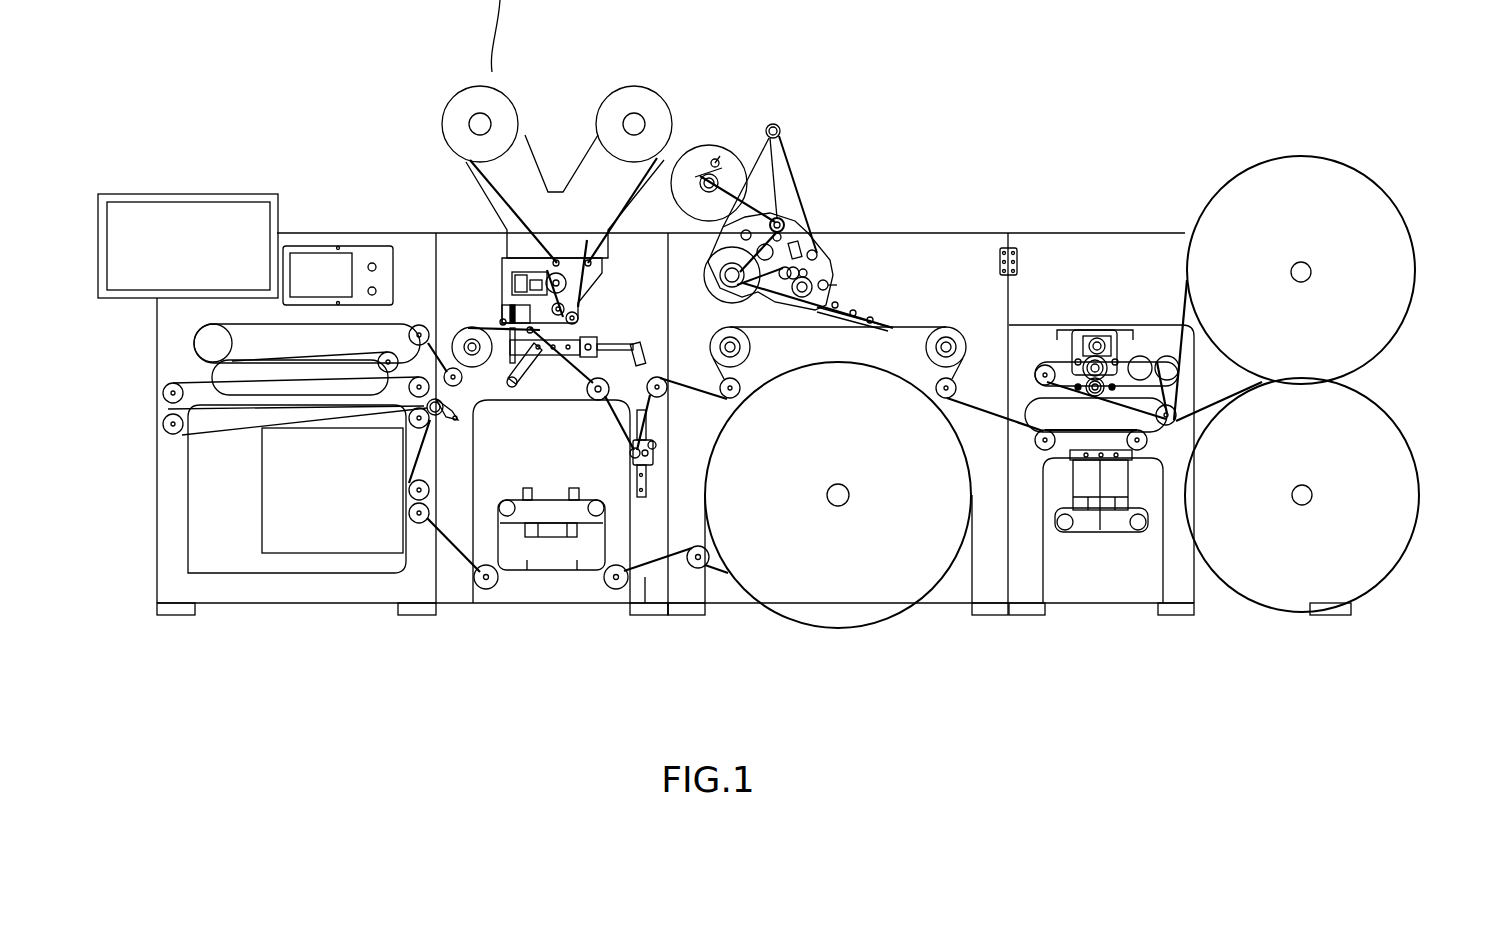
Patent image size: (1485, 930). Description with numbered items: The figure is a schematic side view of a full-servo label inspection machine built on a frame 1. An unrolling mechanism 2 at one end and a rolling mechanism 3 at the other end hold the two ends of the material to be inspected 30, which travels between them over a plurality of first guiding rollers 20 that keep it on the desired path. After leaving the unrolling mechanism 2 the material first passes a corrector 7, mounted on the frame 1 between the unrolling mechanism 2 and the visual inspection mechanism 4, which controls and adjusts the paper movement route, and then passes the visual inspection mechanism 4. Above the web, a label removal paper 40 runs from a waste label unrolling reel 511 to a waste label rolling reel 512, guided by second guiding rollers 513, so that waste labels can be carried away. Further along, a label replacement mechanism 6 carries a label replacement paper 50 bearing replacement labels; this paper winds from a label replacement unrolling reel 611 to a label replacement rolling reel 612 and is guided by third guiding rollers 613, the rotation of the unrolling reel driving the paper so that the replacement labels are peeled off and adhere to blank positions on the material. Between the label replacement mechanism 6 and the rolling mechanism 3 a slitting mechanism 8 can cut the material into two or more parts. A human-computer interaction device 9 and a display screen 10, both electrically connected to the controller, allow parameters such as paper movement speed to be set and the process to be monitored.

The frame 1 is at (1038, 278).
The unrolling mechanism 2 is at (836, 506).
The rolling mechanism 3 is at (1305, 489).
The visual inspection mechanism 4 is at (323, 520).
The label replacement mechanism 6 is at (793, 153).
The corrector 7 is at (567, 560).
The slitting mechanism 8 is at (1143, 377).
The human-computer interaction device 9 is at (302, 268).
The display screen 10 is at (177, 217).
The first guiding roller 20 is at (1043, 442).
The material to be inspected 30 is at (650, 575).
The label removal paper 40 is at (543, 184).
The label replacement paper 50 is at (793, 173).
The waste label unrolling reel 511 is at (480, 124).
The waste label rolling reel 512 is at (634, 124).
The second guiding roller 513 is at (548, 280).
The label replacement unrolling reel 611 is at (712, 165).
The label replacement rolling reel 612 is at (772, 210).
The third guiding roller 613 is at (827, 277).